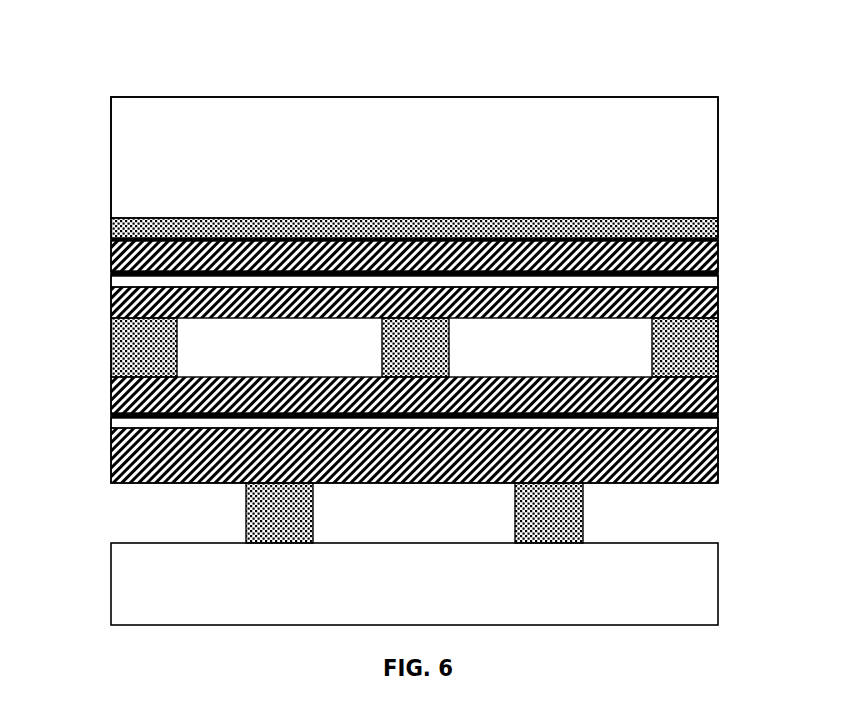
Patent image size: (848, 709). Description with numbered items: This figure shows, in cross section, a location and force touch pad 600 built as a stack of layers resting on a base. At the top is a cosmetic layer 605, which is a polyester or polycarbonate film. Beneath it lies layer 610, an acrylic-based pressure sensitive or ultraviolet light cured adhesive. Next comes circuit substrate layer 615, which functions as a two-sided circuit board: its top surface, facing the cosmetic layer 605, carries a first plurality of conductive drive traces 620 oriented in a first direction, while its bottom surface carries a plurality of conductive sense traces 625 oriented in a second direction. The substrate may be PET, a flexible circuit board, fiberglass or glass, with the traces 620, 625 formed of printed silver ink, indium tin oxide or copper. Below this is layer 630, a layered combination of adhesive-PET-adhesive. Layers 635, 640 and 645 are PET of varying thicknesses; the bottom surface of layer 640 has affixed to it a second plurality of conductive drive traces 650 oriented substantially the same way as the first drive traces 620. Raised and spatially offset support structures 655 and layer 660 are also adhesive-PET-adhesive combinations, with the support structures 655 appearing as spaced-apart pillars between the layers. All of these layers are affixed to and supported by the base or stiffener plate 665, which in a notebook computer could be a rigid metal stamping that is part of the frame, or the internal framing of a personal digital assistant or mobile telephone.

The location and force touch pad 600 is at (439, 247).
The cosmetic layer 605 is at (533, 170).
The adhesive layer 610 is at (718, 226).
The circuit substrate layer 615 is at (718, 254).
The first plurality of conductive drive traces 620 is at (111, 239).
The conductive sense traces 625 is at (111, 274).
The adhesive-PET-adhesive layer 630 is at (718, 280).
The PET layer 635 is at (111, 303).
The PET layer 640 is at (111, 402).
The PET layer 645 is at (111, 460).
The second plurality of conductive drive traces 650 is at (718, 417).
The raised and spatially offset support structures 655 is at (177, 347).
The adhesive-PET-adhesive layer 660 is at (718, 427).
The base or stiffener plate 665 is at (468, 595).